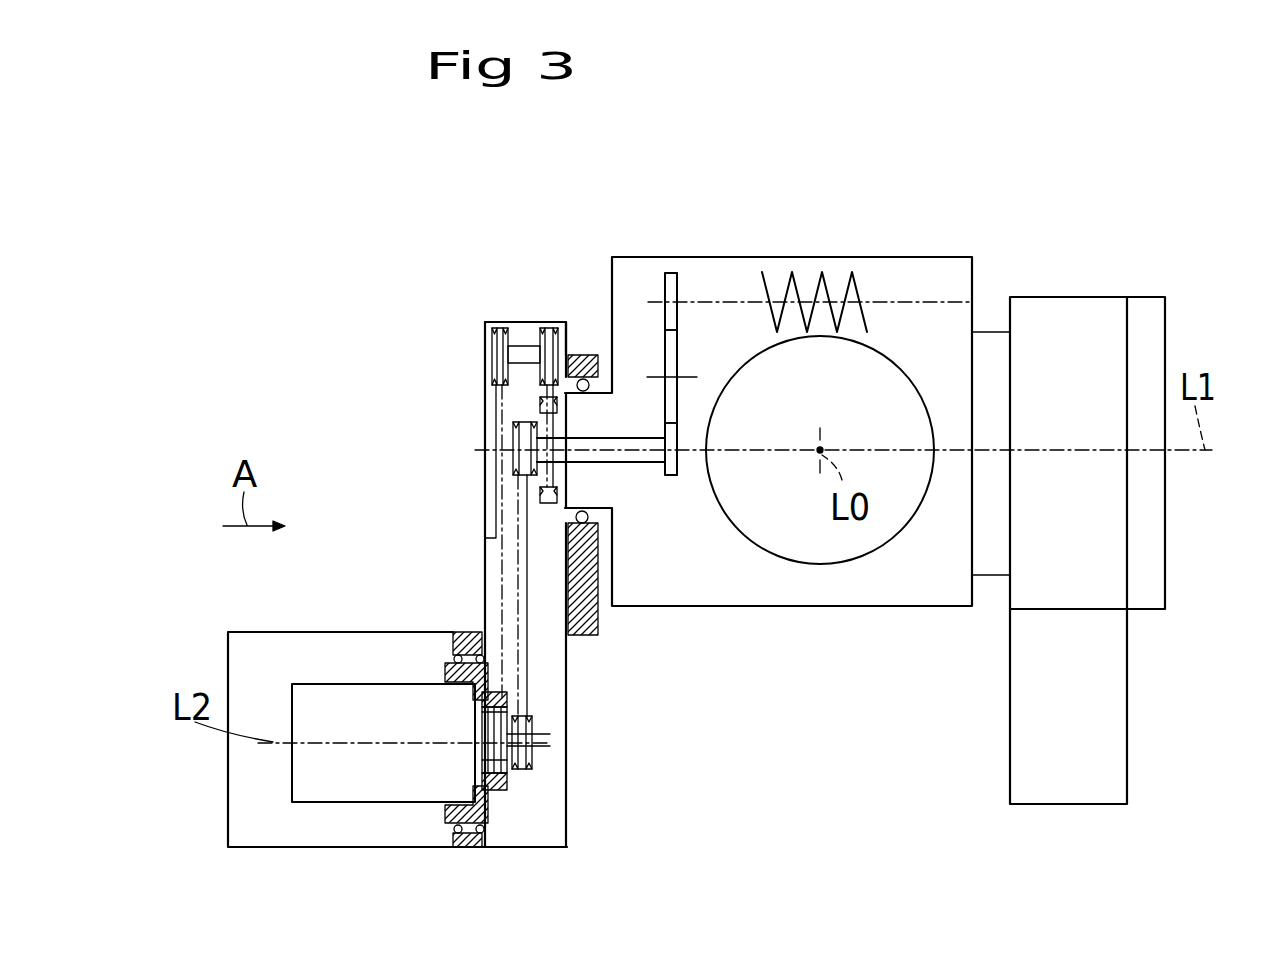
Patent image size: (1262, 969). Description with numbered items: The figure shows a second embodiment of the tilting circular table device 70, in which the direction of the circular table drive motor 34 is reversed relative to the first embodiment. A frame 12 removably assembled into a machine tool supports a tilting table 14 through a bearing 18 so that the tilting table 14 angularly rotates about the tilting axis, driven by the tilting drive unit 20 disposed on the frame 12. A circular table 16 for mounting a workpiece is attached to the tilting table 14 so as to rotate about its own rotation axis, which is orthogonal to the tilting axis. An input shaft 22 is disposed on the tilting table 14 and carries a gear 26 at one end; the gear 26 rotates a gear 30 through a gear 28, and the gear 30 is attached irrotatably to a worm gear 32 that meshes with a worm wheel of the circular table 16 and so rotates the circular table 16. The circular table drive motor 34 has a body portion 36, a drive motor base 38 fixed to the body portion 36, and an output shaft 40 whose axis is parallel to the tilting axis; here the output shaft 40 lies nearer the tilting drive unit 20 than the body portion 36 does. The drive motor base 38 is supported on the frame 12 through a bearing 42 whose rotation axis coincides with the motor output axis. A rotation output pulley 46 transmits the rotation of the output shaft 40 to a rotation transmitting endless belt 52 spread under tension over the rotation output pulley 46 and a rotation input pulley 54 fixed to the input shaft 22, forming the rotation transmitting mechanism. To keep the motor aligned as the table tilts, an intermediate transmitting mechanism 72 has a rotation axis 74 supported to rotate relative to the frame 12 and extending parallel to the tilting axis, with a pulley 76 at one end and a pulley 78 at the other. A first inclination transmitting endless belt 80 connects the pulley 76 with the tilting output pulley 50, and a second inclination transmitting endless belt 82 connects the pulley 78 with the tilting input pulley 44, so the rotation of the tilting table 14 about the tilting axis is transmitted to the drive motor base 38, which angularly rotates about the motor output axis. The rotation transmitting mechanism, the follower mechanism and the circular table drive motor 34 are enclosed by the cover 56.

The frame 12 is at (580, 352).
The tilting table 14 is at (922, 615).
The circular table 16 is at (905, 350).
The bearing 18 is at (600, 385).
The tilting drive unit 20 is at (1078, 290).
The input shaft 22 is at (633, 465).
The gear 26 is at (676, 477).
The gear 28 is at (677, 345).
The gear 30 is at (672, 272).
The worm gear 32 is at (830, 275).
The circular table drive motor 34 is at (394, 812).
The body portion 36 is at (331, 790).
The drive motor base 38 is at (497, 815).
The output shaft 40 is at (535, 735).
The bearing 42 is at (455, 840).
The tilting input pulley 44 is at (507, 785).
The rotation output pulley 46 is at (535, 760).
The tilting output pulley 50 is at (540, 405).
The rotation transmitting endless belt 52 is at (547, 688).
The rotation input pulley 54 is at (518, 468).
The cover 56 is at (485, 578).
The tilting circular table device 70 is at (750, 205).
The intermediate transmitting mechanism 72 is at (517, 330).
The rotation axis 74 is at (500, 330).
The pulley 76 is at (546, 330).
The pulley 78 is at (485, 340).
The first inclination transmitting endless belt 80 is at (558, 412).
The second inclination transmitting endless belt 82 is at (484, 540).